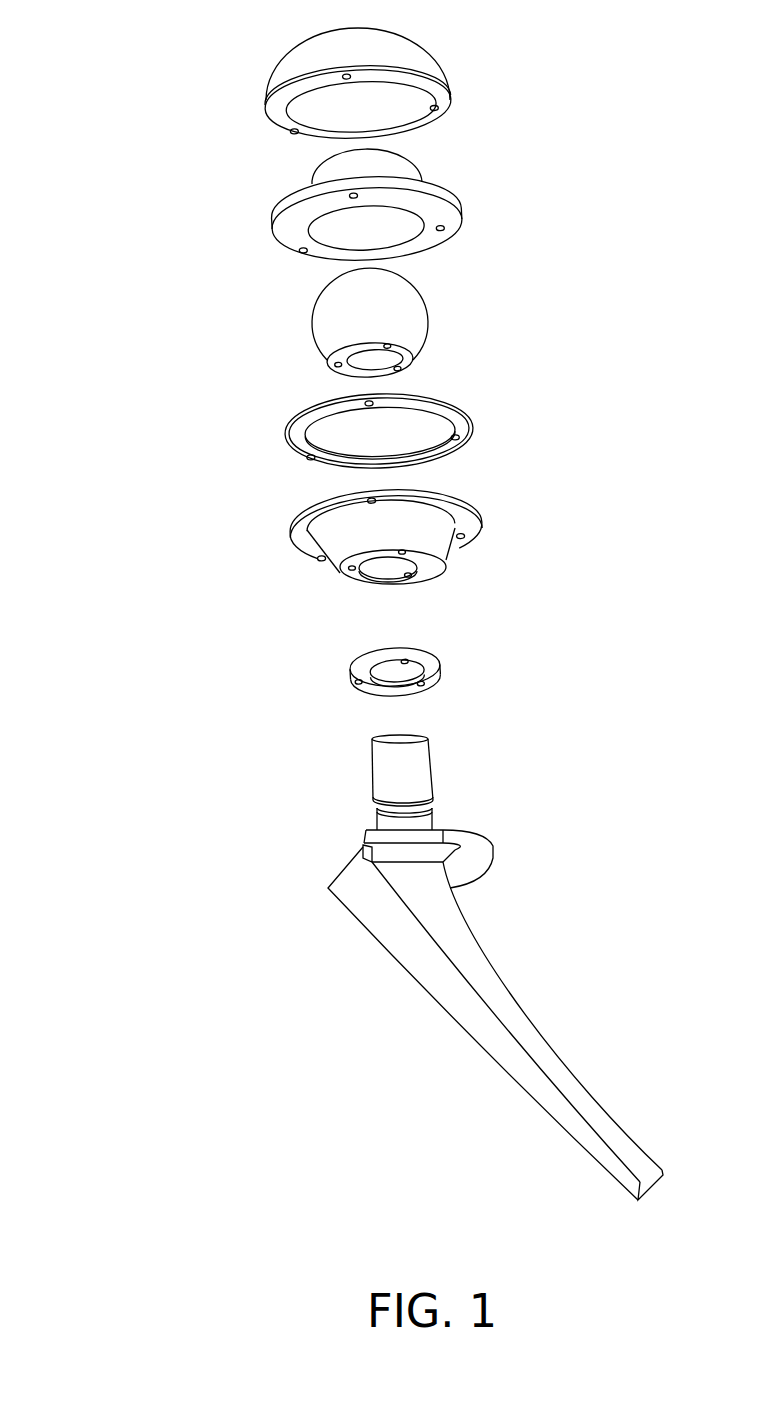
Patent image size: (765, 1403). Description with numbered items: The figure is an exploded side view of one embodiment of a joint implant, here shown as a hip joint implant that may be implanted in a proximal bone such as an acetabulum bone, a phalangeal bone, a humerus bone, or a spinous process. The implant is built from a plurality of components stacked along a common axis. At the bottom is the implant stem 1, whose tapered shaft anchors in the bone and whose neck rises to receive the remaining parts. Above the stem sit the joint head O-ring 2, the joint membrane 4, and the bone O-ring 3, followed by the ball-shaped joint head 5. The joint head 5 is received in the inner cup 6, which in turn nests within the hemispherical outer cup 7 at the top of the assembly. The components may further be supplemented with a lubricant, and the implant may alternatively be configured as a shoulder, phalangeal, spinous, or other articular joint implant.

The implant stem 1 is at (373, 935).
The joint head O-ring 2 is at (360, 682).
The bone O-ring 3 is at (305, 453).
The joint membrane 4 is at (335, 567).
The joint head 5 is at (322, 350).
The inner cup 6 is at (298, 249).
The outer cup 7 is at (292, 135).